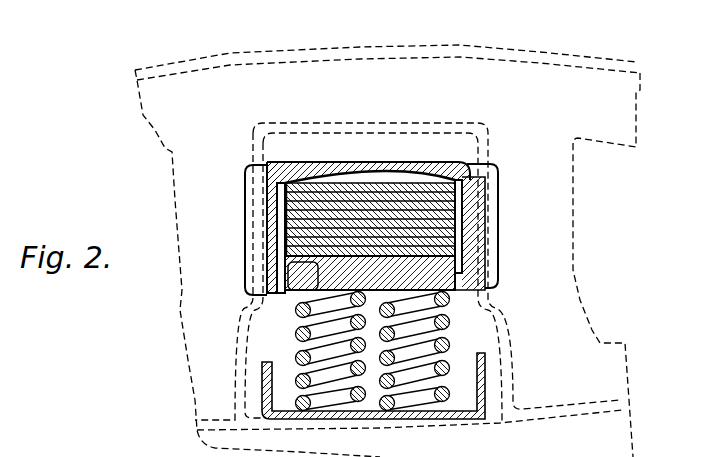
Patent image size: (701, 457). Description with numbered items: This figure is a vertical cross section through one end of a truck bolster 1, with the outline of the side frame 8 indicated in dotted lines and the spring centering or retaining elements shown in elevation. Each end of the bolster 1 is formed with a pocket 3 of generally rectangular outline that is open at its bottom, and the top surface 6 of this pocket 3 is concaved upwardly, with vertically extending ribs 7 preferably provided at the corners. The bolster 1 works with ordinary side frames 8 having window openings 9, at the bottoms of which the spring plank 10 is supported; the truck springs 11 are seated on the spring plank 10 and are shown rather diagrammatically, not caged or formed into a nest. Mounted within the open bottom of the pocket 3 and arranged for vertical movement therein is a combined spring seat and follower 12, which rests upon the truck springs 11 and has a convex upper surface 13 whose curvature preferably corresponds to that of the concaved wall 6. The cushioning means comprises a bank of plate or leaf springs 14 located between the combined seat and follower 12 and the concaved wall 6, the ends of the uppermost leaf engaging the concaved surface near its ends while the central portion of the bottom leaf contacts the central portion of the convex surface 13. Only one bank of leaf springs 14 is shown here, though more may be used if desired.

The bolster 1 is at (293, 162).
The pocket 3 is at (409, 170).
The top surface 6 is at (374, 174).
The ribs 7 is at (285, 221).
The side frames 8 is at (603, 82).
The window openings 9 is at (347, 145).
The spring plank 10 is at (467, 419).
The truck springs 11 is at (297, 333).
The combined spring seat and follower 12 is at (455, 274).
The convex upper surface 13 is at (262, 284).
The plate or leaf springs 14 is at (456, 196).